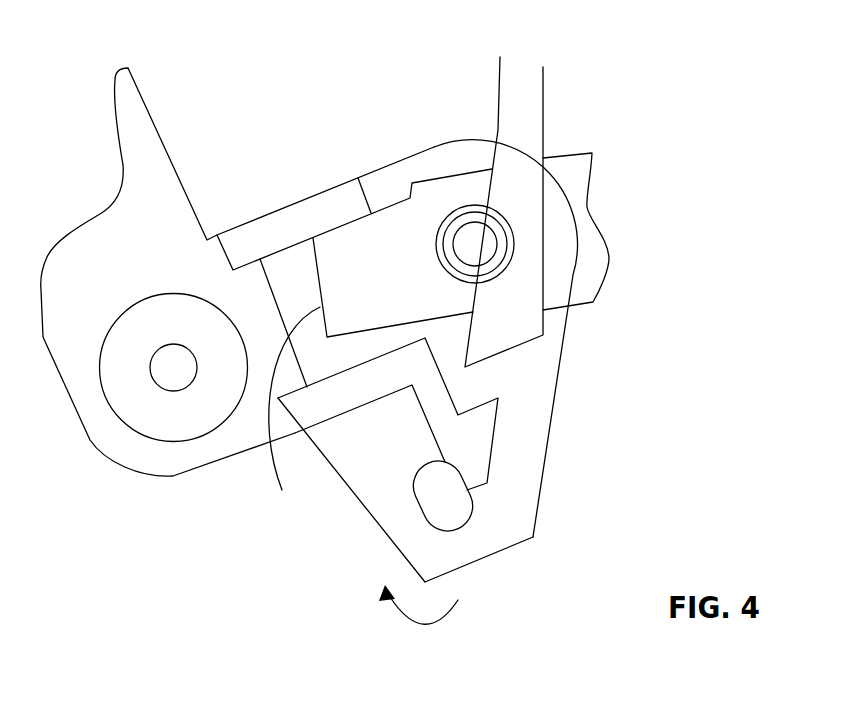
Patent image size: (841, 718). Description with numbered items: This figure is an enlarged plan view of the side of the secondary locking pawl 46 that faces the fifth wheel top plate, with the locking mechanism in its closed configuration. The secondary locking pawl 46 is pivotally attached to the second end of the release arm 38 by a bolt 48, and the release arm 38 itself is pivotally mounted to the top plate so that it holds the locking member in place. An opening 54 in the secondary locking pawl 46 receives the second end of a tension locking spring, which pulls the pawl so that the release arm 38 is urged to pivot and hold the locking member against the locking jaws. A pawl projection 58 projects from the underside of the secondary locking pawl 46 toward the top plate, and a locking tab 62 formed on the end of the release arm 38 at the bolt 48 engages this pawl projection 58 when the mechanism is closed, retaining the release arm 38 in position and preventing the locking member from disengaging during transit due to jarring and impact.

The release arm 38 is at (578, 154).
The secondary locking pawl 46 is at (313, 149).
The bolt 48 is at (457, 207).
The opening 54 is at (463, 528).
The pawl projection 58 is at (280, 222).
The locking tab 62 is at (282, 490).